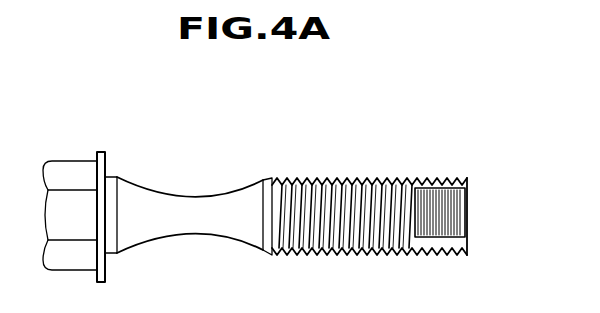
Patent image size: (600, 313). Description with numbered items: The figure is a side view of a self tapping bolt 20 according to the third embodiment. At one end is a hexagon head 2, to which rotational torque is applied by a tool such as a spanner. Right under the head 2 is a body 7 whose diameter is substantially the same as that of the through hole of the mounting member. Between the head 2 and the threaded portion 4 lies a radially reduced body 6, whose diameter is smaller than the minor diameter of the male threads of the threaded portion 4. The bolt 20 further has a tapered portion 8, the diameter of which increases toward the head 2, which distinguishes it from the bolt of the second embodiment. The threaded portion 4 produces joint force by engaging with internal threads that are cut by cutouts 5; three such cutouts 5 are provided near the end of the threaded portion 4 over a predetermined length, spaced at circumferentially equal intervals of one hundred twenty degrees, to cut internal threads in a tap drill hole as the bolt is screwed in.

The bolt 20 is at (172, 168).
The head 2 is at (63, 172).
The body 7 is at (110, 184).
The radially reduced body 6 is at (207, 199).
The tapered portion 8 is at (145, 233).
The threaded portion 4 is at (330, 200).
The cutouts 5 is at (440, 188).